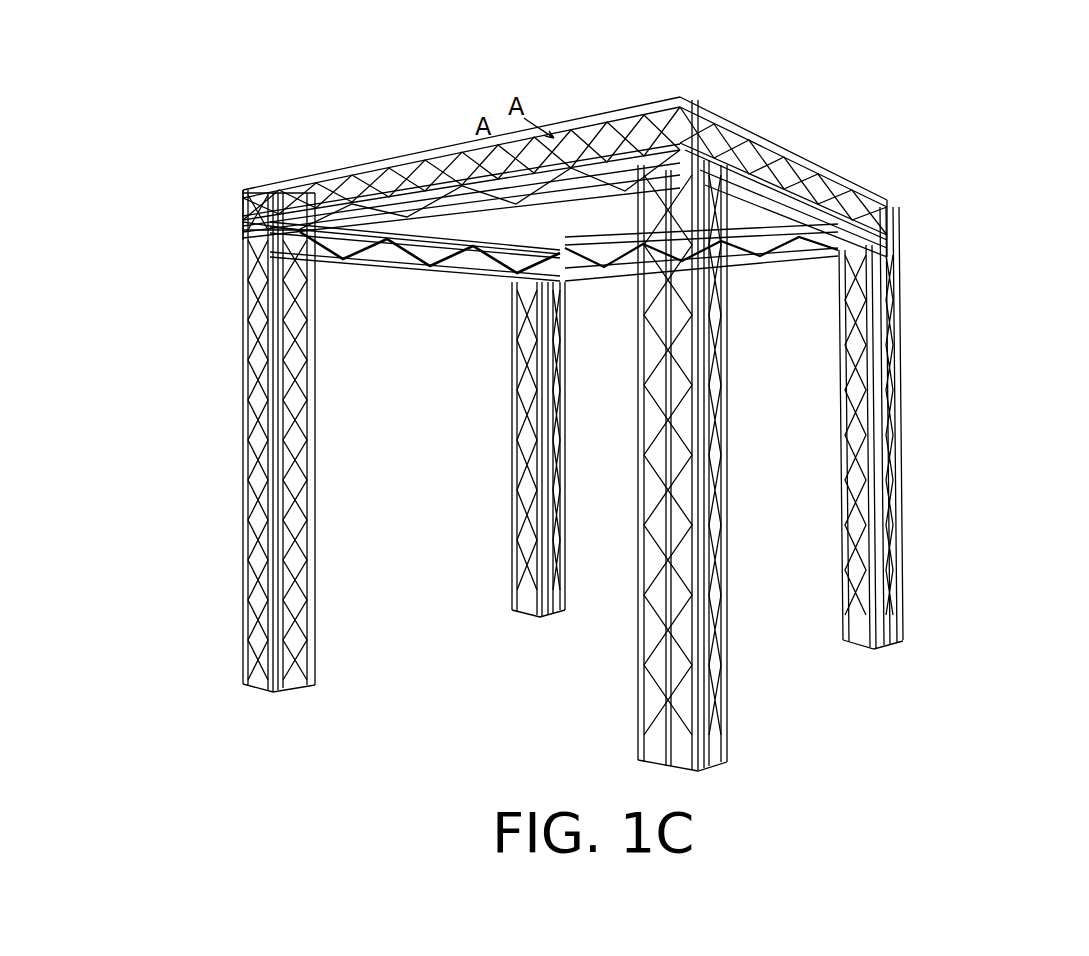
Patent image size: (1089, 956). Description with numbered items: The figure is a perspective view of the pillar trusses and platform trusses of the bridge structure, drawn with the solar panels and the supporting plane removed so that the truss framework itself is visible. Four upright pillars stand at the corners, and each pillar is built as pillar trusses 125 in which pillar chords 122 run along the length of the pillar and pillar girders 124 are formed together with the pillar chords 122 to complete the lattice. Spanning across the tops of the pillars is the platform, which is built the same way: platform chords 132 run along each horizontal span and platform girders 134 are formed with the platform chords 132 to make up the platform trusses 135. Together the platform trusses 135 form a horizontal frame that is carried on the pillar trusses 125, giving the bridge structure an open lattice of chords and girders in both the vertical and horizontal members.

The pillar chords 122 is at (262, 346).
The pillar girders 124 is at (248, 305).
The pillar trusses 125 is at (560, 435).
The platform chords 132 is at (322, 190).
The platform girders 134 is at (410, 176).
The platform trusses 135 is at (565, 164).